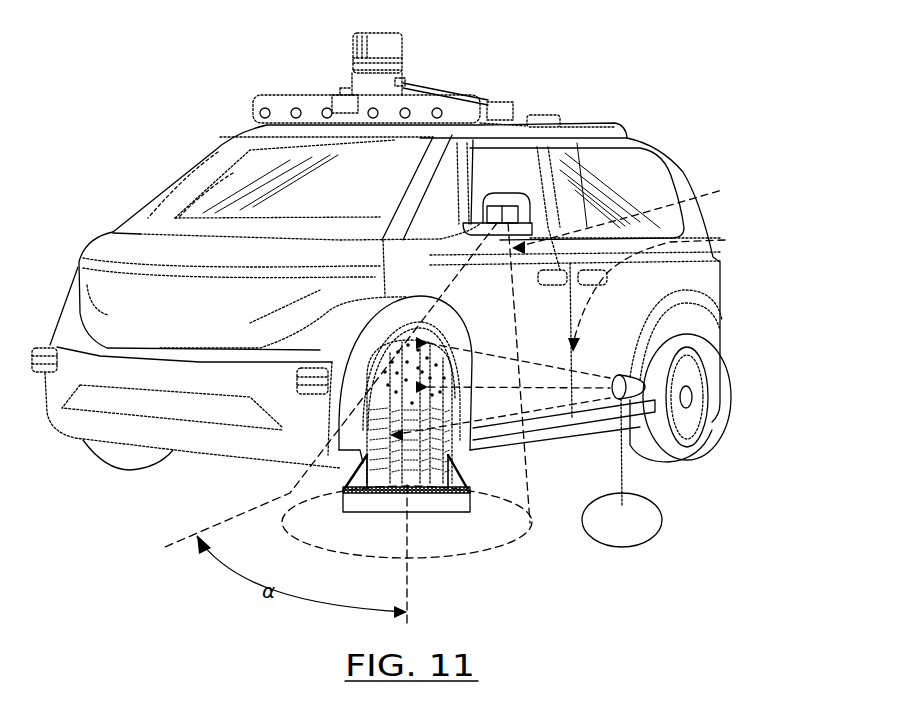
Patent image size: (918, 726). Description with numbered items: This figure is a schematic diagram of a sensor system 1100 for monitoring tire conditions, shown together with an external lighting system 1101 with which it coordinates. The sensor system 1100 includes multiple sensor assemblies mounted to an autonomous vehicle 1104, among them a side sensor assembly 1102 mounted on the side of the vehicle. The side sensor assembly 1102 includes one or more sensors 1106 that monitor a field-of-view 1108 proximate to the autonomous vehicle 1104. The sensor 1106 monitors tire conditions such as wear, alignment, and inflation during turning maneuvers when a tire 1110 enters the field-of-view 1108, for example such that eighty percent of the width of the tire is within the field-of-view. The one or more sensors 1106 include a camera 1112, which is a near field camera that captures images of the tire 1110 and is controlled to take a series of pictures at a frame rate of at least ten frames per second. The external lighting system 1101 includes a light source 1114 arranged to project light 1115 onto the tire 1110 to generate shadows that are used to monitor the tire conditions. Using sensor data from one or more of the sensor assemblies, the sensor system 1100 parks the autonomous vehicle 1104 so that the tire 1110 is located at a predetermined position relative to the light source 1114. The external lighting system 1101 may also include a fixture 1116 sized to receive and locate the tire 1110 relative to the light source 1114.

The sensor system 1100 is at (122, 86).
The external lighting system 1101 is at (628, 362).
The side sensor assembly 1102 is at (495, 182).
The autonomous vehicle 1104 is at (692, 165).
The sensor 1106 is at (530, 217).
The field-of-view 1108 is at (642, 215).
The tire 1110 is at (365, 363).
The camera 1112 is at (508, 206).
The light source 1114 is at (655, 382).
The light 1115 is at (676, 287).
The fixture 1116 is at (430, 513).